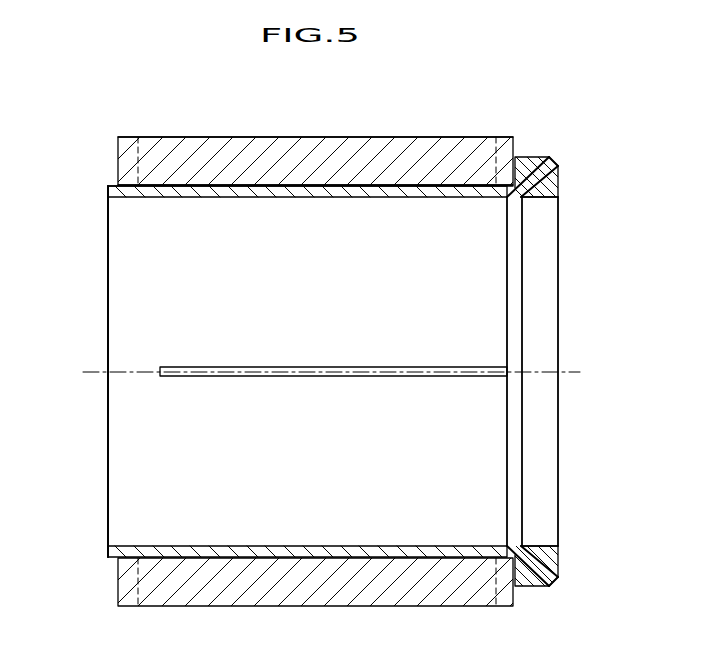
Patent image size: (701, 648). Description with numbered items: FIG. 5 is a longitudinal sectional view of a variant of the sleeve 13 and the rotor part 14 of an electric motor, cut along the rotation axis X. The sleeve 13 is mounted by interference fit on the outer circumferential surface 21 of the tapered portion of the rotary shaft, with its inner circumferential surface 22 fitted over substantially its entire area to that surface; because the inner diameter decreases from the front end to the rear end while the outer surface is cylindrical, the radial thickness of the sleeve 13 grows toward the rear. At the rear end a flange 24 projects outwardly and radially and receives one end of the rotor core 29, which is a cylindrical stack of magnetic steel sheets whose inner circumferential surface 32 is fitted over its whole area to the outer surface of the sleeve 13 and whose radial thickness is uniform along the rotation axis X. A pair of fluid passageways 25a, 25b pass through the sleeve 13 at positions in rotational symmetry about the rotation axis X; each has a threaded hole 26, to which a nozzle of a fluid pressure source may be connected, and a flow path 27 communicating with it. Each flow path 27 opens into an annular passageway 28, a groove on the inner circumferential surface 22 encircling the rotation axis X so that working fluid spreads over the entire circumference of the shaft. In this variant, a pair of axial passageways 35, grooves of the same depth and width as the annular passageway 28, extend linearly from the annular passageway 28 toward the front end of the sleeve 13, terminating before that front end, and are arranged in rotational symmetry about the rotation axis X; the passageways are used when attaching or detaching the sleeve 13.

The sleeve 13 is at (106, 183).
The rotor part 14 is at (160, 135).
The outer circumferential surface of the tapered portion 21 is at (360, 188).
The inner circumferential surface of the sleeve 22 is at (222, 190).
The flange 24 is at (528, 157).
The fluid passageway 25a is at (557, 153).
The fluid passageway 25b is at (564, 581).
The threaded hole 26 is at (553, 162).
The flow path 27 is at (527, 198).
The annular passageway 28 is at (520, 246).
The rotor core 29 is at (388, 137).
The inner circumferential surface of the rotor core 32 is at (302, 186).
The axial passageway 35 is at (356, 375).
The rotation axis X is at (580, 372).